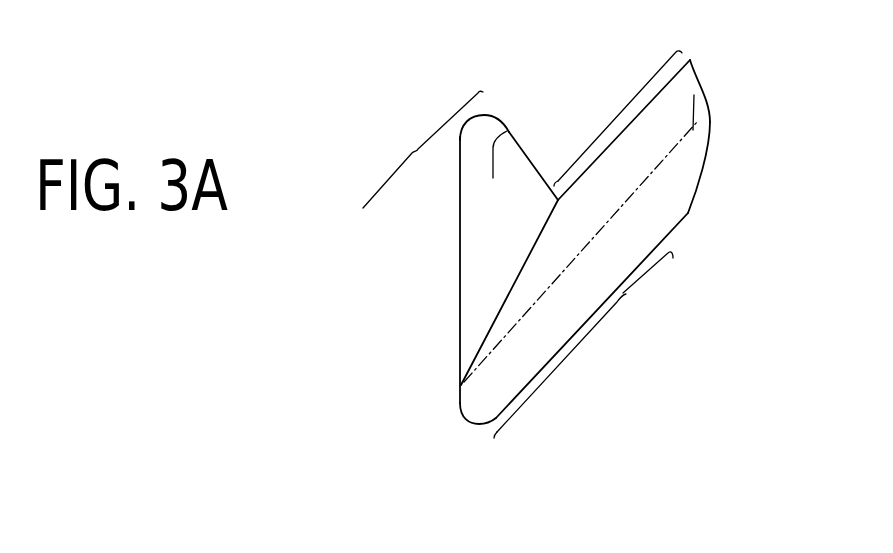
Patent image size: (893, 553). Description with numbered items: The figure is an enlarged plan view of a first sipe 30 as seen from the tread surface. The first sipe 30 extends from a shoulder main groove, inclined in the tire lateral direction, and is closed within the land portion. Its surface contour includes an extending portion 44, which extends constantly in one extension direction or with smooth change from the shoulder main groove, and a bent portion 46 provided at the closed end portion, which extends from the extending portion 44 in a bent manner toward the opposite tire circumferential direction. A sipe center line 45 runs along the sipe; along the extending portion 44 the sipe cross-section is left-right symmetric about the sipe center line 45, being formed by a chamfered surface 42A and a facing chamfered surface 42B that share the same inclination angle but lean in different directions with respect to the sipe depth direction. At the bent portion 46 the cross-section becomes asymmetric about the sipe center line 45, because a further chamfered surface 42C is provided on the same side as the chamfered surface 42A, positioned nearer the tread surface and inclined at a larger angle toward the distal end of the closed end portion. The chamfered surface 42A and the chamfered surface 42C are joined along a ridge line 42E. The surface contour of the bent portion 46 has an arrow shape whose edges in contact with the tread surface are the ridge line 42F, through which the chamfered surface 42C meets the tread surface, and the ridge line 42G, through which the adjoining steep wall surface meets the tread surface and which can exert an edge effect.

The first sipe 30 is at (722, 196).
The chamfered surface 42A is at (497, 333).
The chamfered surface 42B is at (690, 218).
The chamfered surface 42C is at (510, 131).
The ridge line 42E is at (503, 305).
The ridge line 42F is at (529, 162).
The ridge line 42G is at (460, 163).
The extending portion 44 is at (614, 119).
The sipe center line 45 is at (697, 92).
The bent portion 46 is at (572, 375).